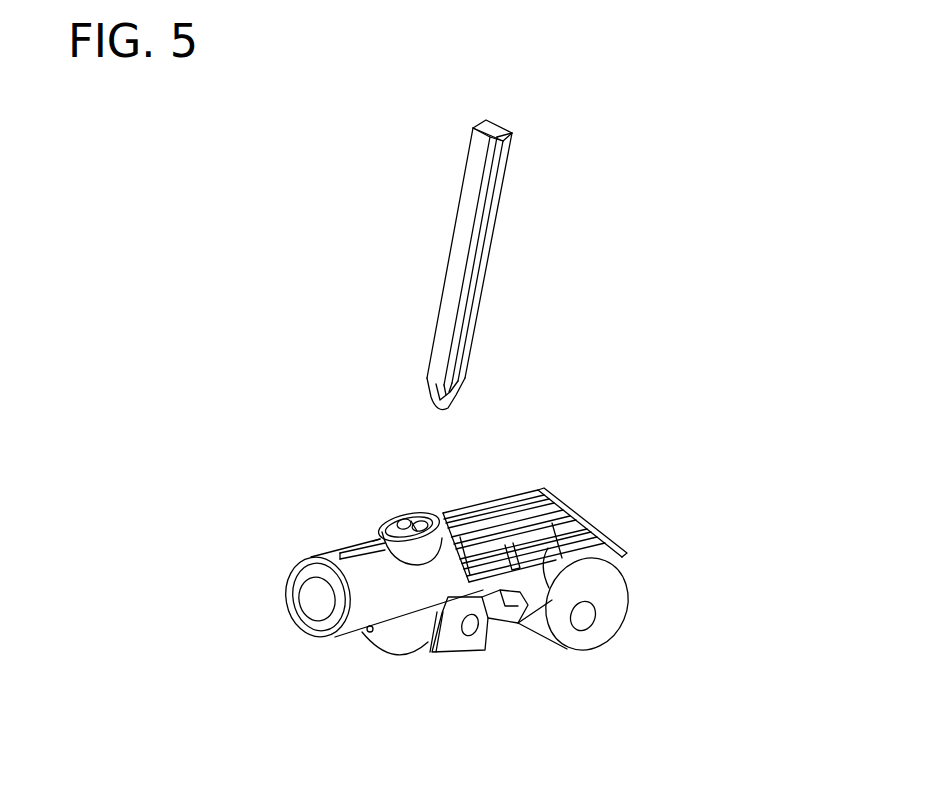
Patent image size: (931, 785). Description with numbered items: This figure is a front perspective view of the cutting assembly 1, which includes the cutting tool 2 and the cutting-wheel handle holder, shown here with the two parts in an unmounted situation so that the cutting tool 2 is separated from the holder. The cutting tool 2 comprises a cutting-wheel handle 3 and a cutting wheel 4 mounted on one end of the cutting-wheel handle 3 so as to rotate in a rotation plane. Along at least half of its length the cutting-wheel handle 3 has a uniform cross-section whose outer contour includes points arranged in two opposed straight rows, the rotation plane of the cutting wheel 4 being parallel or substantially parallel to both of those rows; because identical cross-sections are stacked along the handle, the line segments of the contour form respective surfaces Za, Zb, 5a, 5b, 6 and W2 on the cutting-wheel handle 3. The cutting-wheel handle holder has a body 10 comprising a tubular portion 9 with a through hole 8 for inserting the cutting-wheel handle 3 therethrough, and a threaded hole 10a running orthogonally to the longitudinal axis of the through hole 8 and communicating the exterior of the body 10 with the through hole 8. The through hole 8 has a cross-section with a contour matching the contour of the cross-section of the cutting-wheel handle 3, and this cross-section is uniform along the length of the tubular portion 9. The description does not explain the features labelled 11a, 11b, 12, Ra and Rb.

The cutting assembly 1 is at (658, 329).
The cutting tool 2 is at (245, 131).
The cutting-wheel handle 3 is at (443, 130).
The cutting wheel 4 is at (432, 400).
The surface 5a is at (492, 120).
The surface 5b is at (511, 131).
The surface 6 is at (453, 277).
The through hole 8 is at (384, 491).
The tubular portion 9 is at (410, 640).
The body 10 is at (605, 600).
The threaded hole 10a is at (322, 601).
The first rib 11a is at (421, 521).
The second rib 11b is at (452, 519).
The boss 12 is at (388, 519).
The first recess Ra is at (404, 514).
The second recess Rb is at (430, 521).
The surface W2 is at (487, 291).
The surface Za is at (478, 122).
The surface Zb is at (495, 163).